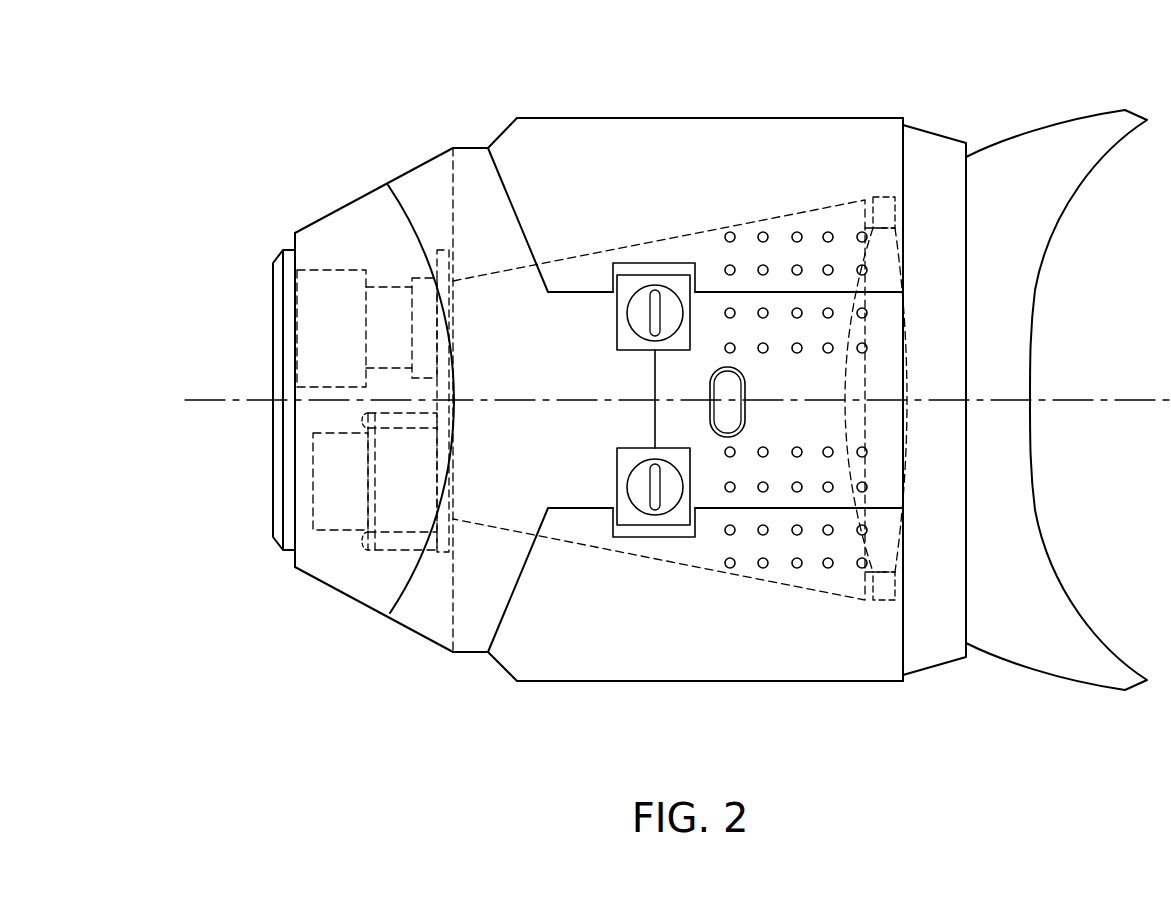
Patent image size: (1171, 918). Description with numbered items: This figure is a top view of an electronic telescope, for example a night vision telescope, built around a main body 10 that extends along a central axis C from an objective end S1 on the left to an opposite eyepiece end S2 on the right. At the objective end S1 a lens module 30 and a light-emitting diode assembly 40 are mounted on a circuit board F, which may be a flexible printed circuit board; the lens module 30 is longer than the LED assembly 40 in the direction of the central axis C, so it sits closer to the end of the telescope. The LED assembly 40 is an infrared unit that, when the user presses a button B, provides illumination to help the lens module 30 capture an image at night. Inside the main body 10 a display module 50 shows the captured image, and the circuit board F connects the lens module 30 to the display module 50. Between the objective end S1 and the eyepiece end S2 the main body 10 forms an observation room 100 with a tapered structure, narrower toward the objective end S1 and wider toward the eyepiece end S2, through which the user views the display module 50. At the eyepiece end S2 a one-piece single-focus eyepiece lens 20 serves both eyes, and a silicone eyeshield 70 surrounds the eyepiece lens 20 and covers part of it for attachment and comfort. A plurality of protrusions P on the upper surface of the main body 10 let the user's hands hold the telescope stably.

The main body 10 is at (733, 655).
The eyepiece lens 20 is at (880, 200).
The lens module 30 is at (332, 288).
The light-emitting diode (LED) assembly 40 is at (338, 507).
The display module 50 is at (431, 227).
The eyeshield 70 is at (1018, 143).
The observation room 100 is at (697, 230).
The button B is at (640, 492).
The protrusions P is at (797, 568).
The circuit board F is at (424, 545).
The objective end S1 is at (307, 580).
The eyepiece end S2 is at (891, 684).
The central axis C is at (660, 401).